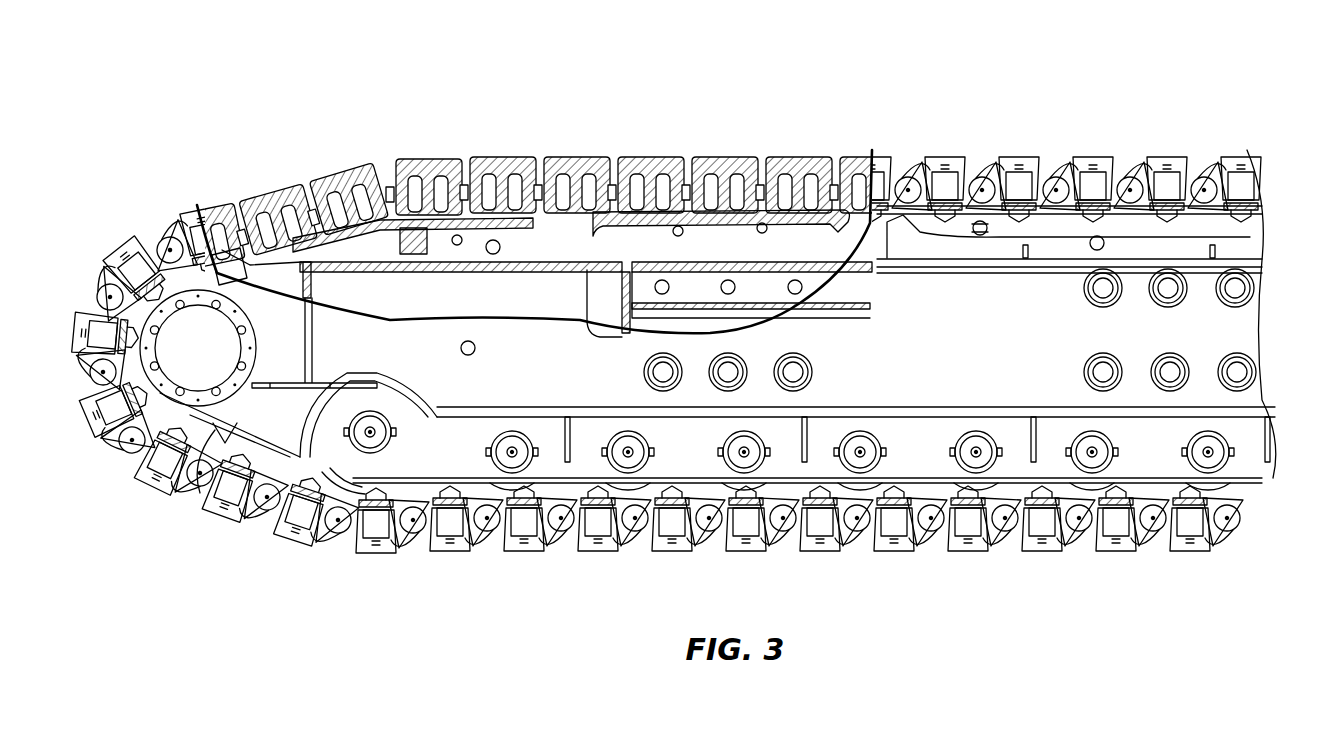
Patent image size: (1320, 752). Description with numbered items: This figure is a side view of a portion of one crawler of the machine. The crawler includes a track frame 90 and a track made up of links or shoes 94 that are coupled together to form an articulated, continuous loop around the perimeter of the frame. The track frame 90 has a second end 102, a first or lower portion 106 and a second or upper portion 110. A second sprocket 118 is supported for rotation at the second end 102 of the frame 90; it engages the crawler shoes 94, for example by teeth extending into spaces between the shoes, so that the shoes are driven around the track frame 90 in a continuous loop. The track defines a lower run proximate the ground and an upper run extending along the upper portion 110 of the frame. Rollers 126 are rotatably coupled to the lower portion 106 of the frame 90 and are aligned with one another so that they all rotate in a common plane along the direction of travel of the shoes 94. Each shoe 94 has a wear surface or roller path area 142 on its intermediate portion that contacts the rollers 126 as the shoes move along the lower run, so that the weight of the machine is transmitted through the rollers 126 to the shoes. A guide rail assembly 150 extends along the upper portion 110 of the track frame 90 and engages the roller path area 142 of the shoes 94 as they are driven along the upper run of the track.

The track frame 90 is at (1218, 330).
The shoes 94 is at (303, 540).
The second end 102 is at (98, 412).
The lower portion 106 is at (962, 536).
The upper portion 110 is at (1175, 244).
The second sprocket 118 is at (200, 482).
The rollers 126 is at (633, 512).
The roller path area 142 is at (530, 205).
The guide rail assembly 150 is at (790, 236).